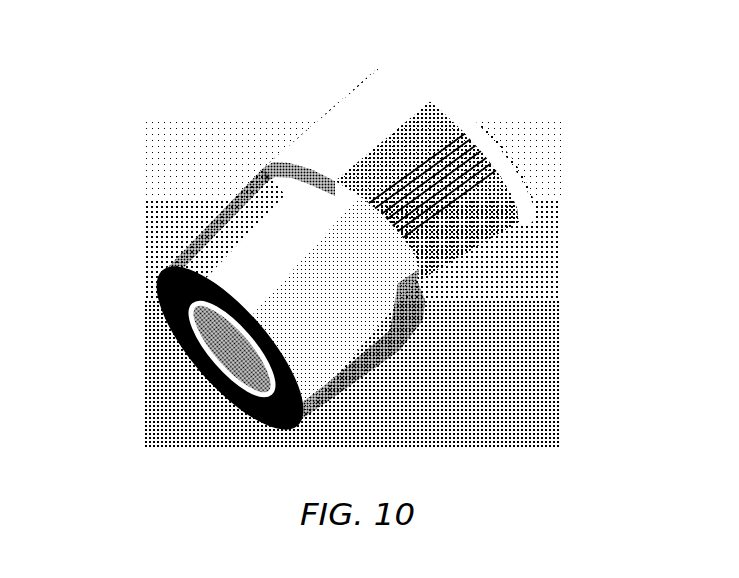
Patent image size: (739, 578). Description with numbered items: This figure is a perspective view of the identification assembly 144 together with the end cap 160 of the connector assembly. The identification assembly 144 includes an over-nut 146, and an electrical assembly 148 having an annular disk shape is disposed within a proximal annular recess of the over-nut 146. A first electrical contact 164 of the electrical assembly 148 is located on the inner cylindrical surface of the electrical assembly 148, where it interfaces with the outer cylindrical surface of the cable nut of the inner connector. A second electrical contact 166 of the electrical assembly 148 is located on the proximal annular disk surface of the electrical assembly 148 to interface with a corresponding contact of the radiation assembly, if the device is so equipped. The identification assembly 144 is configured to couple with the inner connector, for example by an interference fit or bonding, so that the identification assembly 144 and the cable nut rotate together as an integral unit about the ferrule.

The identification assembly 144 is at (200, 112).
The over-nut 146 is at (333, 290).
The electrical assembly 148 is at (157, 330).
The end cap 160 is at (467, 112).
The first electrical contact 164 is at (234, 366).
The second electrical contact 166 is at (195, 355).